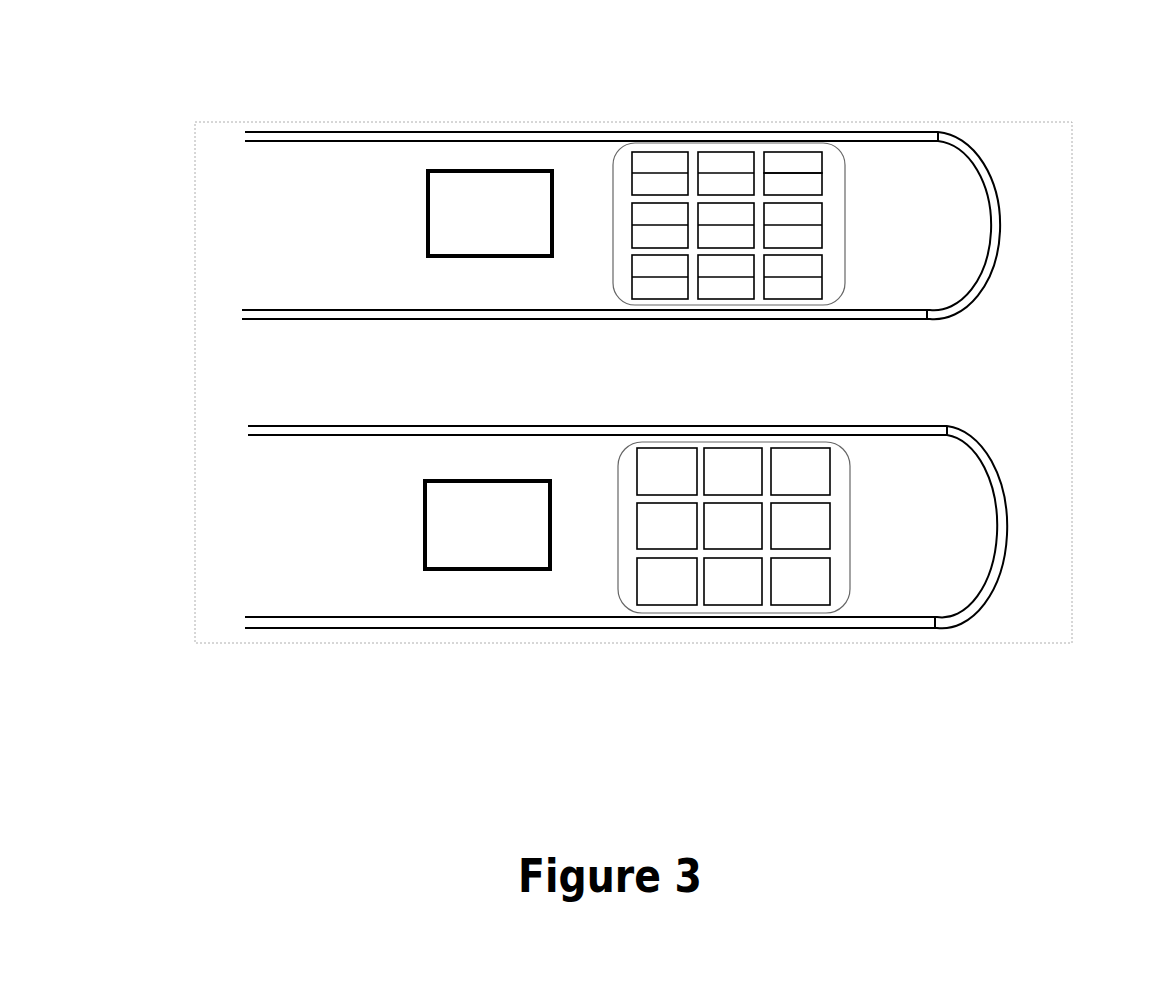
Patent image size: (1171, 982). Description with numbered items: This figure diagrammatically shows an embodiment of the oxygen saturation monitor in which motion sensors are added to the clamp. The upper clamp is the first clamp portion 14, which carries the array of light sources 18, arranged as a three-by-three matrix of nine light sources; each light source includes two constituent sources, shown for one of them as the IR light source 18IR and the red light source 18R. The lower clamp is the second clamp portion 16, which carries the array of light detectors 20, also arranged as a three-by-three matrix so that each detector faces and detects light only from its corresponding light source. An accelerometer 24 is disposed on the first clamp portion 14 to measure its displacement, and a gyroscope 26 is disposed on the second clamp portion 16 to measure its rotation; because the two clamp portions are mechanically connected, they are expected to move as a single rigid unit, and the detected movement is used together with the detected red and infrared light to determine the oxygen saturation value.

The first clamp portion 14 is at (382, 110).
The second clamp portion 16 is at (365, 632).
The array of light sources 18 is at (878, 161).
The IR light source 18IR is at (810, 162).
The red light source 18R is at (810, 185).
The array of light detectors 20 is at (768, 607).
The accelerometer 24 is at (513, 195).
The gyroscope 26 is at (508, 543).